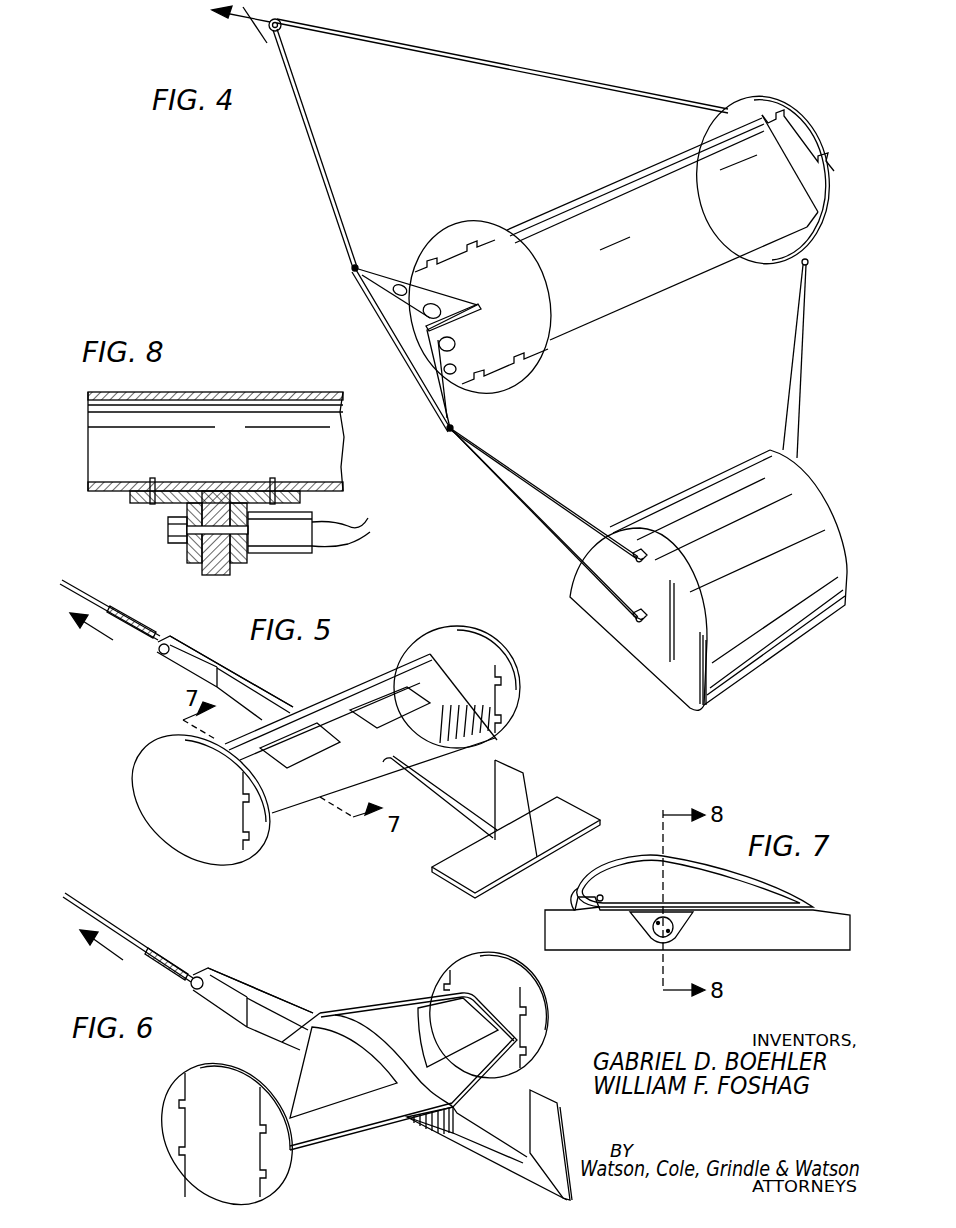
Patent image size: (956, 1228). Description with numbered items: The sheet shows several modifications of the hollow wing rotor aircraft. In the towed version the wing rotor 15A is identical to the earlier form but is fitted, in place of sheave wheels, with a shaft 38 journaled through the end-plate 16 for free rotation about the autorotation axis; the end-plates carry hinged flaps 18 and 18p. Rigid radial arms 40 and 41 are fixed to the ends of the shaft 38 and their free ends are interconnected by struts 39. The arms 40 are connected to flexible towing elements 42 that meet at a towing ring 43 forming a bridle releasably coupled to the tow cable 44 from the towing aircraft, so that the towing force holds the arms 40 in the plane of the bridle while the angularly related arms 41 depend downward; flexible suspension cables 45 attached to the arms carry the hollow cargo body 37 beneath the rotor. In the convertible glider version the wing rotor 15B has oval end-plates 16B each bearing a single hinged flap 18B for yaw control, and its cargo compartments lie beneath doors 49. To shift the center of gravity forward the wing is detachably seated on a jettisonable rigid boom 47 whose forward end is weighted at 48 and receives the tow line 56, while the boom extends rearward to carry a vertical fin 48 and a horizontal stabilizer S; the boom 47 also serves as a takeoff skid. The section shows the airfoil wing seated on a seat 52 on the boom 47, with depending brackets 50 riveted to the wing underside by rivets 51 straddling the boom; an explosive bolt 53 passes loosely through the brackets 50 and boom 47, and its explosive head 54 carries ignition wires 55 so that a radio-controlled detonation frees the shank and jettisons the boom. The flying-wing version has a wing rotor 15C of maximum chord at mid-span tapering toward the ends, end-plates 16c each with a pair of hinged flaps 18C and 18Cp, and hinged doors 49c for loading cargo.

In FIG. 4, the wing rotor 15A is at (627, 196).
In FIG. 5, the wing rotor 15B is at (368, 676).
In FIG. 7, the wing rotor 15B is at (652, 852).
In FIG. 6, the wing rotor 15C is at (399, 1055).
In FIG. 4, the end-plate 16 is at (528, 290).
In FIG. 5, the end-plate 16B is at (205, 850).
In FIG. 6, the end-plate 16c is at (488, 950).
In FIG. 4, the hinged flap 18 is at (455, 228).
In FIG. 4, the hinged flap 18p is at (520, 384).
In FIG. 5, the hinged flap 18B is at (258, 833).
In FIG. 6, the hinged flap 18C is at (185, 1115).
In FIG. 6, the hinged flap 18Cp is at (283, 1163).
In FIG. 4, the cargo body 37 is at (710, 487).
In FIG. 4, the shaft 38 is at (465, 300).
In FIG. 4, the strut 39 is at (420, 344).
In FIG. 4, the radial arm 40 is at (372, 278).
In FIG. 4, the radial arm 41 is at (454, 412).
In FIG. 4, the flexible towing element 42 is at (440, 56).
In FIG. 4, the towing ring 43 is at (283, 22).
In FIG. 4, the tow cable 44 is at (256, 30).
In FIG. 4, the suspension cable 45 is at (535, 505).
In FIG. 8, the boom 47 is at (216, 577).
In FIG. 5, the boom 47 is at (258, 684).
In FIG. 7, the boom 47 is at (600, 952).
In FIG. 6, the boom 47 is at (285, 1028).
In FIG. 5, the weighted end / vertical fin 48 is at (180, 664).
In FIG. 6, the weighted end / vertical fin 48 is at (240, 985).
In FIG. 5, the door 49 is at (312, 745).
In FIG. 6, the hinged door 49c is at (394, 1058).
In FIG. 8, the bracket 50 is at (187, 557).
In FIG. 8, the rivet 51 is at (152, 480).
In FIG. 7, the seat 52 is at (592, 912).
In FIG. 8, the explosive bolt 53 is at (215, 505).
In FIG. 8, the explosive head 54 is at (296, 553).
In FIG. 8, the ignition wire 55 is at (365, 520).
In FIG. 5, the tow line 56 is at (82, 598).
In FIG. 5, the horizontal tail surface S is at (448, 887).